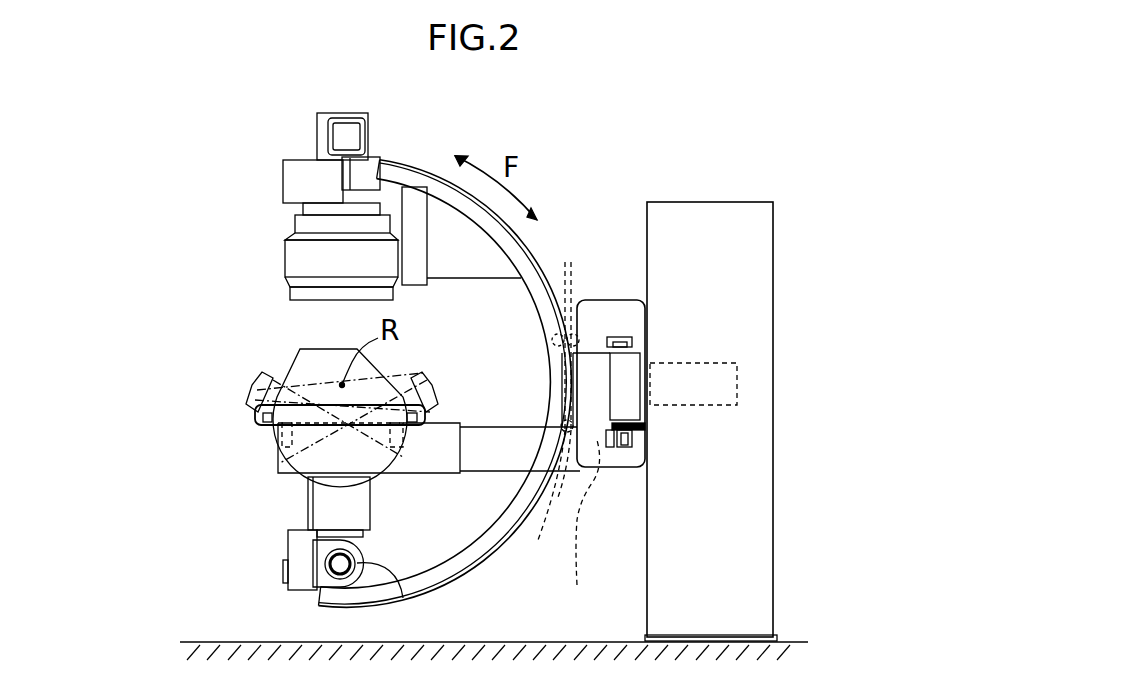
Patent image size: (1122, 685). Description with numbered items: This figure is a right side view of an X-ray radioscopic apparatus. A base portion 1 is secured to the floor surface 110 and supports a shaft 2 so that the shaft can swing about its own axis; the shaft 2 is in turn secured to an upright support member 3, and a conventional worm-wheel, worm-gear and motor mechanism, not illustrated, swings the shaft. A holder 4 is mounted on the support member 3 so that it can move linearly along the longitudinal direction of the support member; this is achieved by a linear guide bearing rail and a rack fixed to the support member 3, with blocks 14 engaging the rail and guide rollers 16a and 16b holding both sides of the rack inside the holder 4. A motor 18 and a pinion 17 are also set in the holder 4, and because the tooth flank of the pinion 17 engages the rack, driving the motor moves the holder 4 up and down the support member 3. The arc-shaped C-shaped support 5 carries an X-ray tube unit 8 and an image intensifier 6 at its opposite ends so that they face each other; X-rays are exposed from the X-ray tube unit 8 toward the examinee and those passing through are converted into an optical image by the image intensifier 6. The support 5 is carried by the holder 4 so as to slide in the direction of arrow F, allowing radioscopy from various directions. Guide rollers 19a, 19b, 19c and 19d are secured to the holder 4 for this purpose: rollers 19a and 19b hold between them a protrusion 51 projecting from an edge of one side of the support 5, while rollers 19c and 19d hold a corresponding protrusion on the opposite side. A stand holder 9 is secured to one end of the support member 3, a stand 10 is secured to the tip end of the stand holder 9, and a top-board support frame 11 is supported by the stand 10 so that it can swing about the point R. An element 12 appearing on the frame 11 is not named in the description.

The base portion 1 is at (710, 202).
The shaft 2 is at (737, 365).
The support member 3 is at (637, 355).
The holder 4 is at (597, 300).
The C-shaped support 5 is at (412, 165).
The protrusion 51 is at (430, 170).
The image intensifier 6 is at (283, 262).
The X-ray tube unit 8 is at (403, 598).
The stand holder 9 is at (483, 472).
The stand 10 is at (278, 477).
The top-board support frame 11 is at (277, 438).
The patient 12 is at (270, 378).
The block 14 is at (614, 337).
The guide roller 16a is at (647, 425).
The guide roller 16b is at (617, 447).
The pinion 17 is at (647, 445).
The motor 18 is at (581, 528).
The guide roller 19a is at (564, 329).
The guide roller 19b is at (552, 340).
The guide roller 19c is at (541, 501).
The guide roller 19d is at (560, 427).
The floor surface 110 is at (210, 642).